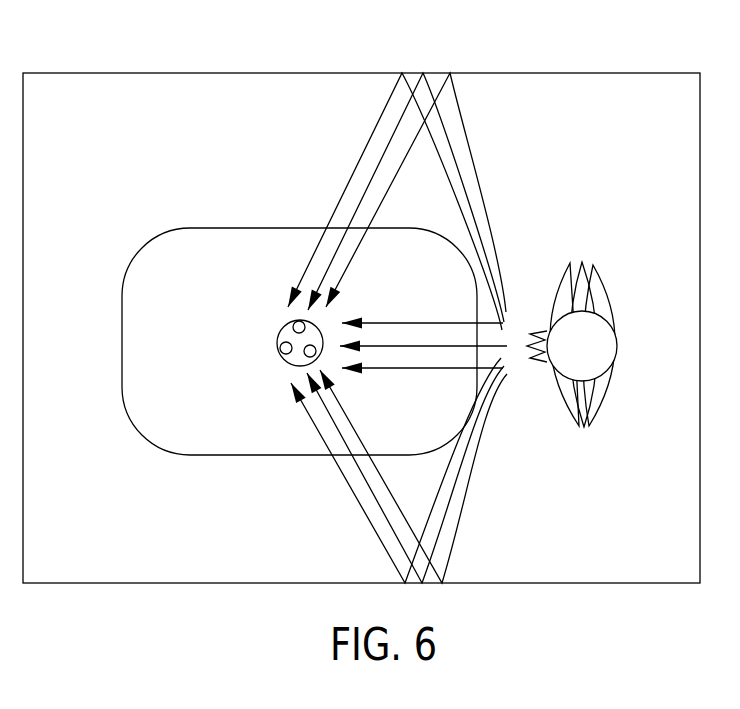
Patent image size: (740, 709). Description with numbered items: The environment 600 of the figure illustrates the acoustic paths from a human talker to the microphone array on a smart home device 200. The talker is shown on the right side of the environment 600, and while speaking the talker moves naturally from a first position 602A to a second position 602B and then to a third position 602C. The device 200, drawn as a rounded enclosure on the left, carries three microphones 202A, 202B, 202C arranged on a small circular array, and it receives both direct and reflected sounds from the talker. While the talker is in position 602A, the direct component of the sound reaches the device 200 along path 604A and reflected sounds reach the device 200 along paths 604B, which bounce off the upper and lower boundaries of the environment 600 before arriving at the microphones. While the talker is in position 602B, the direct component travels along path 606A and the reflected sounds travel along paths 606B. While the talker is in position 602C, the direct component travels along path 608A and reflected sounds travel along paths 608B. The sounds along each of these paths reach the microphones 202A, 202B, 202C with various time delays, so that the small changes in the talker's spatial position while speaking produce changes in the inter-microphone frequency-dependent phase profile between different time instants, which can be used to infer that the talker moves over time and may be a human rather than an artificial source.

The environment 600 is at (152, 72).
The smart home device 200 is at (278, 353).
The microphone 202A is at (278, 348).
The microphone 202B is at (293, 321).
The microphone 202C is at (293, 370).
The position 602A is at (579, 264).
The position 602B is at (604, 272).
The position 602C is at (566, 270).
The path 604A is at (423, 345).
The paths 604B is at (367, 188).
The path 606A is at (382, 323).
The paths 606B is at (333, 207).
The path 608A is at (465, 367).
The paths 608B is at (397, 167).